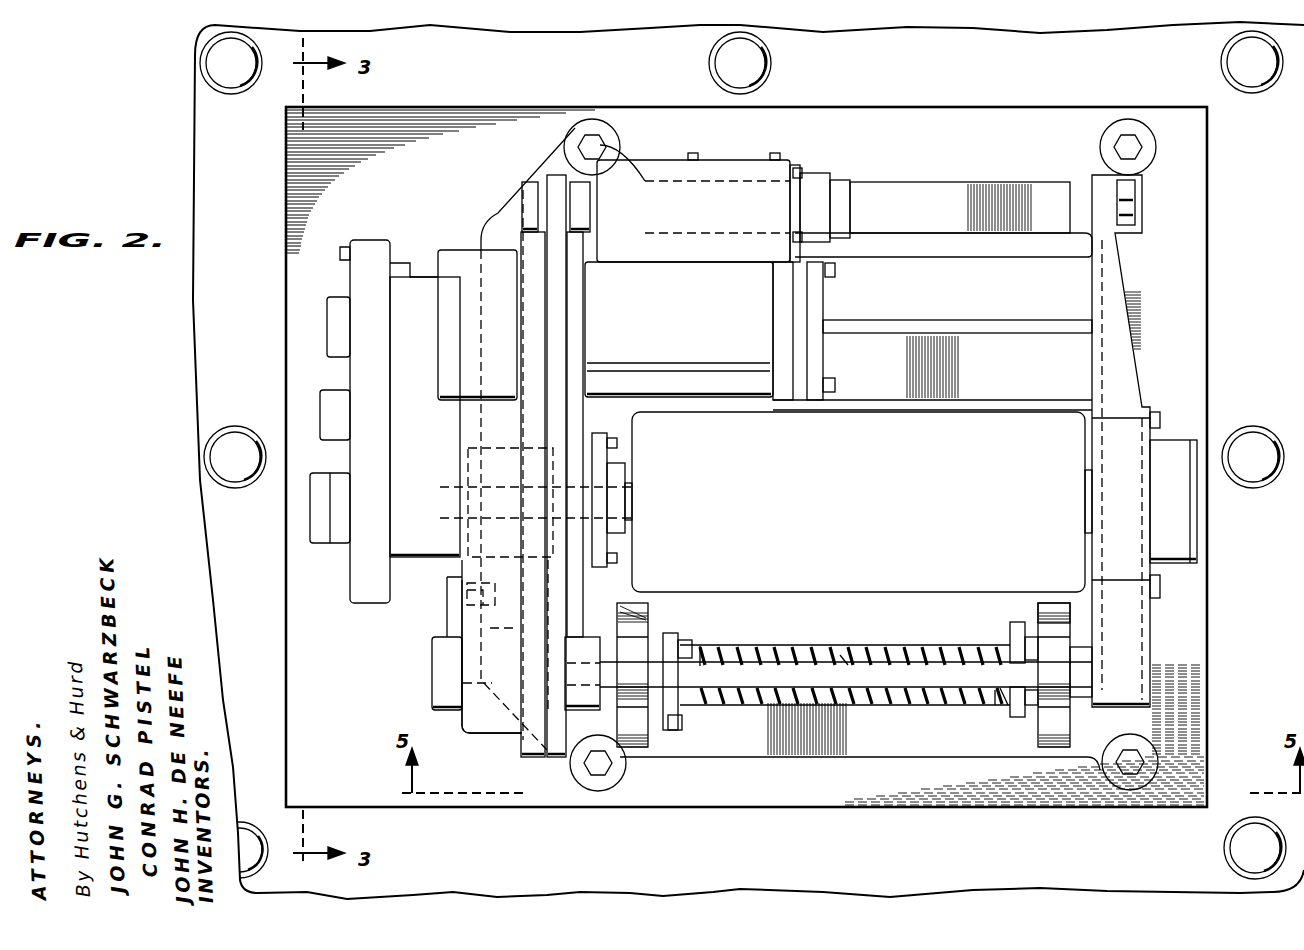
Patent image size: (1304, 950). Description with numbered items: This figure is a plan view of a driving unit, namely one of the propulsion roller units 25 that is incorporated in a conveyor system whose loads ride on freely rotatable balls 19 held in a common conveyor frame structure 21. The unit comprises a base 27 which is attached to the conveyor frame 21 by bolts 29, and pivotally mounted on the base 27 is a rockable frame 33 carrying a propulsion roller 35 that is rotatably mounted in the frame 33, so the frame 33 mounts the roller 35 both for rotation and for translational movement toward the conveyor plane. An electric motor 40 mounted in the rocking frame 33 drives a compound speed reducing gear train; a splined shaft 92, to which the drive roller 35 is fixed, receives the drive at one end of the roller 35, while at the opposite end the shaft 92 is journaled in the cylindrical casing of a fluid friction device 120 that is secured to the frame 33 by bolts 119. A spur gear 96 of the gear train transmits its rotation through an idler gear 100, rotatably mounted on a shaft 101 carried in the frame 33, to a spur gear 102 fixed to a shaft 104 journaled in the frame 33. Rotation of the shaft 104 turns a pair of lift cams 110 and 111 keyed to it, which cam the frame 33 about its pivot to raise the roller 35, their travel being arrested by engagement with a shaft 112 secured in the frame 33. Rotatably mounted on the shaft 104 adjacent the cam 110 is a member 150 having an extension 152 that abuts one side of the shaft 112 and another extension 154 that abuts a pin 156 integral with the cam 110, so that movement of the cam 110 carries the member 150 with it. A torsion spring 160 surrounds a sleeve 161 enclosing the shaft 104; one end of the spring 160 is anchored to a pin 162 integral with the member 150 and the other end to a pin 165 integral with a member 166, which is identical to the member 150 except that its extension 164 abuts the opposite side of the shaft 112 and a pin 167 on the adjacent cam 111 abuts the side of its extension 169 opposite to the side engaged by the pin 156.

The balls 19 is at (216, 63).
The conveyor frame structure 21 is at (226, 565).
The propulsion roller unit 25 is at (275, 168).
The base 27 is at (500, 213).
The bolts 29 is at (600, 148).
The rockable frame 33 is at (416, 486).
The propulsion roller 35 is at (862, 502).
The electric motor 40 is at (838, 277).
The shaft 92 is at (630, 500).
The spur gear 96 is at (530, 448).
The idler gear 100 is at (463, 613).
The shaft 101 is at (467, 590).
The spur gear 102 is at (487, 733).
The shaft 104 is at (463, 660).
The lift cam 110 is at (640, 605).
The lift cam 111 is at (1058, 605).
The shaft 112 is at (843, 673).
The bolts 119 is at (1155, 422).
The fluid friction device casing 120 is at (1205, 550).
The member 150 is at (664, 626).
The extension 152 is at (688, 645).
The extension 154 is at (665, 730).
The pin 156 is at (684, 717).
The torsion spring 160 is at (803, 650).
The sleeve 161 is at (843, 657).
The pin 162 is at (708, 648).
The extension 164 is at (1015, 718).
The pin 165 is at (990, 708).
The member 166 is at (985, 720).
The pin 167 is at (1030, 632).
The extension 169 is at (1008, 620).